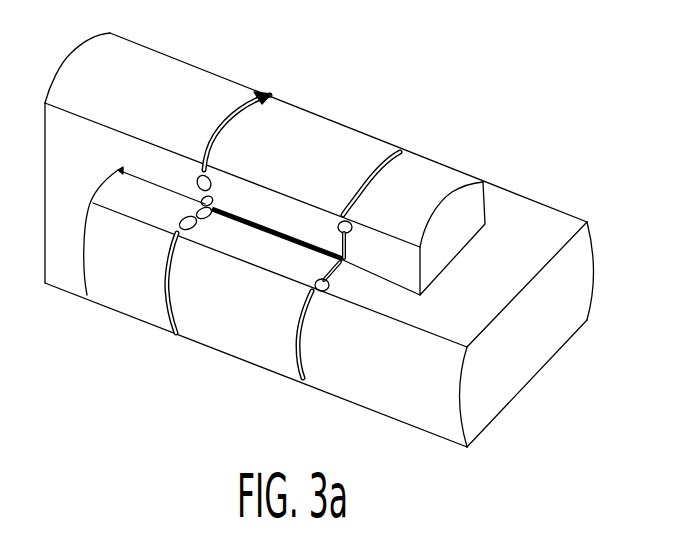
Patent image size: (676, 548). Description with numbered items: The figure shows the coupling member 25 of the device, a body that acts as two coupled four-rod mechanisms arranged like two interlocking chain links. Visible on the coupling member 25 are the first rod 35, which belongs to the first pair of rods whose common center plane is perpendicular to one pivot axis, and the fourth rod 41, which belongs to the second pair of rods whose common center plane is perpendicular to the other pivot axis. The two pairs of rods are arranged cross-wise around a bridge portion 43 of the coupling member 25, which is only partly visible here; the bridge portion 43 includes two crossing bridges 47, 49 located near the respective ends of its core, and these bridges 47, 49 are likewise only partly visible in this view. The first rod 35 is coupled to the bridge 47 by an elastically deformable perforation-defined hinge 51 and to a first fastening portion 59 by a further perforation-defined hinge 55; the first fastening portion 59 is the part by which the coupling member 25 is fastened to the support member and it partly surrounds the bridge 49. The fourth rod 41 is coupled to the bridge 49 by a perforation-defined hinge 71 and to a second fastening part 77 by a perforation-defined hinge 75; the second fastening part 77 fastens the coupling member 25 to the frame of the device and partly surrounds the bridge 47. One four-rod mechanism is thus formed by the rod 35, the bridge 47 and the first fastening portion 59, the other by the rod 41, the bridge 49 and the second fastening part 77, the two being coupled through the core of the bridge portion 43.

The coupling member 25 is at (327, 275).
The first rod 35 is at (313, 133).
The fourth rod 41 is at (232, 342).
The bridge portion 43 is at (280, 241).
The bridge 47 is at (430, 177).
The bridge 49 is at (117, 293).
The elastically deformable perforation-defined hinge 51 is at (387, 160).
The elastically deformable perforation-defined hinge 55 is at (248, 105).
The first fastening portion 59 is at (143, 68).
The elastically deformable perforation-defined hinge 71 is at (175, 333).
The elastically deformable perforation-defined hinge 75 is at (305, 370).
The second fastening part 77 is at (572, 318).